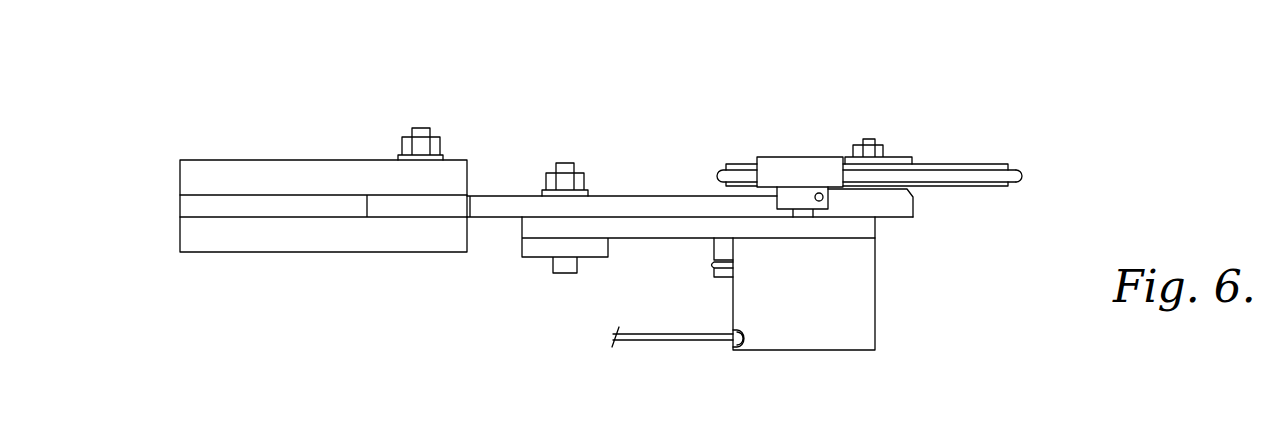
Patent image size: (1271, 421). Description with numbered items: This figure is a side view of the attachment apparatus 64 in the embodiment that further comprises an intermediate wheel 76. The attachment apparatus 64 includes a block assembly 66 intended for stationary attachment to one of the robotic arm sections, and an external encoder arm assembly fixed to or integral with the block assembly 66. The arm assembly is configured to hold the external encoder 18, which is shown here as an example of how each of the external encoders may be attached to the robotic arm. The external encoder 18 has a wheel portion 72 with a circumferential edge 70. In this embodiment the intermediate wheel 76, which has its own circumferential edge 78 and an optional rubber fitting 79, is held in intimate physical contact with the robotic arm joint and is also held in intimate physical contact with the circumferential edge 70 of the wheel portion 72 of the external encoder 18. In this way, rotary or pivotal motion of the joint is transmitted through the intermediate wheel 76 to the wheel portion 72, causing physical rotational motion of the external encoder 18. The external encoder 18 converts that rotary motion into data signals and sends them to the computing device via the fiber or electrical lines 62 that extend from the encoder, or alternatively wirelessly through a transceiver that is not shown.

The attachment apparatus 64 is at (280, 117).
The block assembly 66 is at (198, 160).
The circumferential edge 70 is at (778, 168).
The wheel portion 72 is at (820, 157).
The intermediate wheel 76 is at (988, 163).
The circumferential edge 78 is at (728, 167).
The rubber fitting 79 is at (1022, 177).
The external encoder 18 is at (863, 305).
The fiber or electrical lines 62 is at (657, 340).